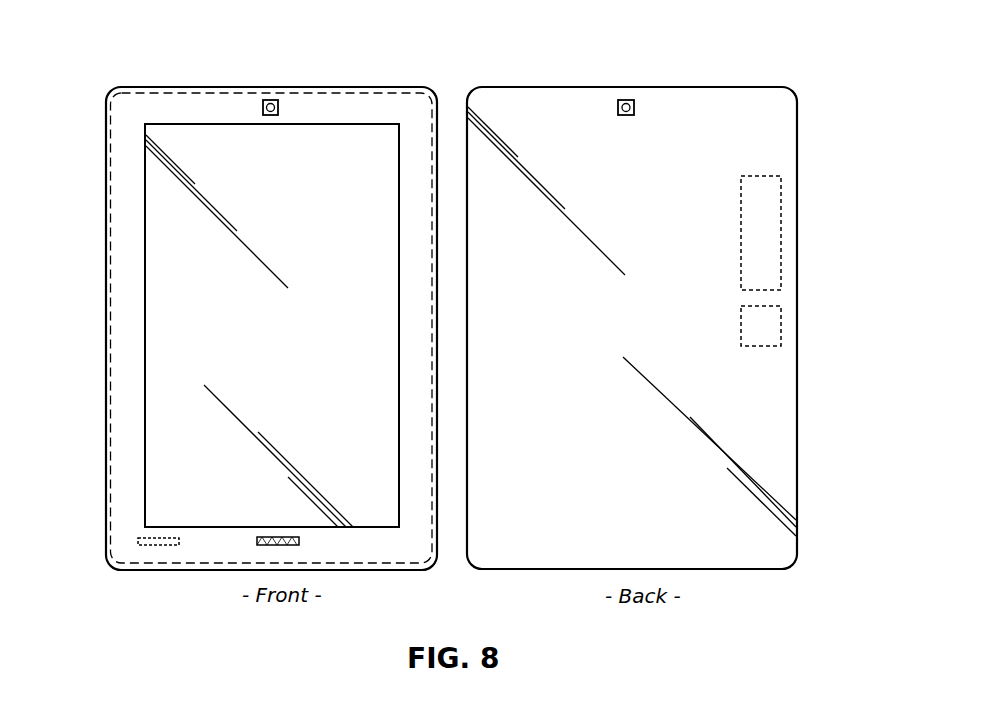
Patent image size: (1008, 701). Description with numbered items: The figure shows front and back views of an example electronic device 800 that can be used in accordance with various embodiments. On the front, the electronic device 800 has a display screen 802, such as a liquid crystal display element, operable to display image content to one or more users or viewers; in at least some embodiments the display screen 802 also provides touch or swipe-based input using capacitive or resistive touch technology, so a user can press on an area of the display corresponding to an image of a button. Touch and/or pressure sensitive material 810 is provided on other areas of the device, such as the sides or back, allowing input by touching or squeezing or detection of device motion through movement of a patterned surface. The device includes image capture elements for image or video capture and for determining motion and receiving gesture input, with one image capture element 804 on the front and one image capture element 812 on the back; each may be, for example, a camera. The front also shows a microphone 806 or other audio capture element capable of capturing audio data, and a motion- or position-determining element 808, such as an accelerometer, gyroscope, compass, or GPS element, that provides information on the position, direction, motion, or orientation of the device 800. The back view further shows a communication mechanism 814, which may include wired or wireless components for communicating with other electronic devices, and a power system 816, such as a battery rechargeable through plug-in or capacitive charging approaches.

The electronic device 800 is at (843, 96).
The display screen 802 is at (145, 242).
The image capture element 804 is at (268, 100).
The microphone 806 is at (287, 546).
The motion- or position-determining element 808 is at (155, 546).
The touch and/or pressure sensitive material 810 is at (109, 392).
The image capture element 812 is at (624, 100).
The communication mechanism 814 is at (781, 251).
The power system 816 is at (781, 327).